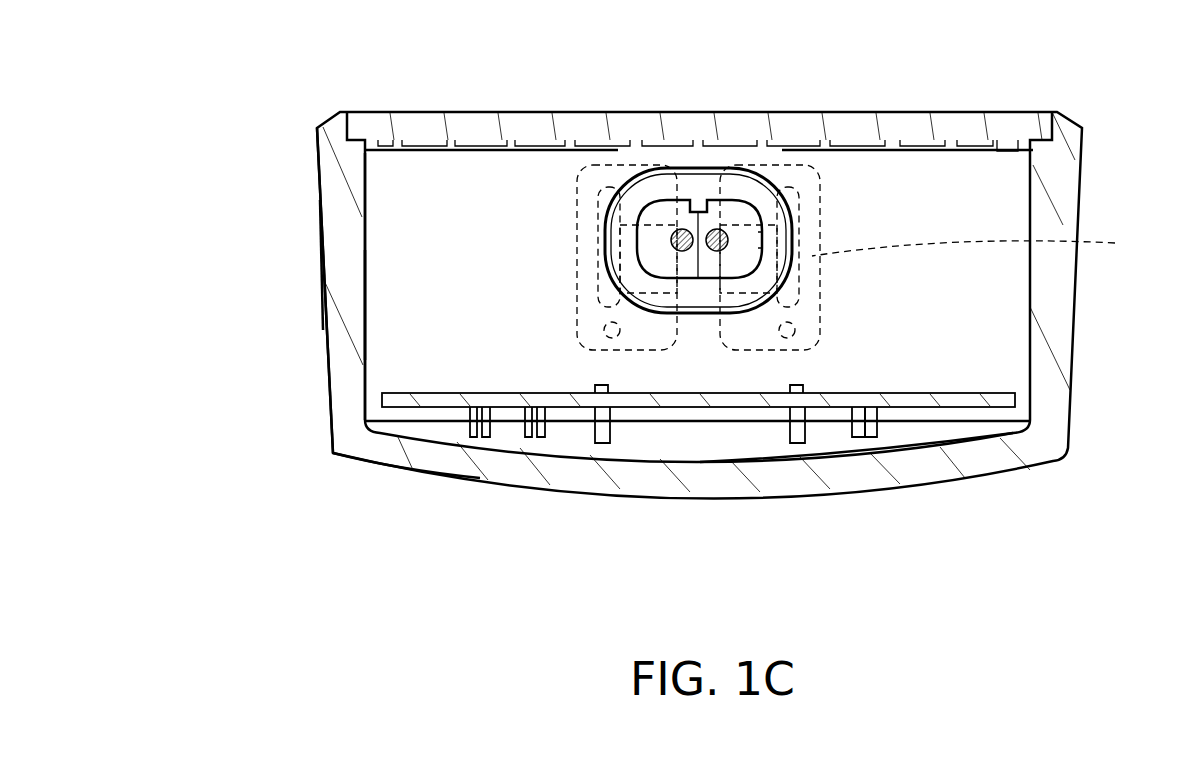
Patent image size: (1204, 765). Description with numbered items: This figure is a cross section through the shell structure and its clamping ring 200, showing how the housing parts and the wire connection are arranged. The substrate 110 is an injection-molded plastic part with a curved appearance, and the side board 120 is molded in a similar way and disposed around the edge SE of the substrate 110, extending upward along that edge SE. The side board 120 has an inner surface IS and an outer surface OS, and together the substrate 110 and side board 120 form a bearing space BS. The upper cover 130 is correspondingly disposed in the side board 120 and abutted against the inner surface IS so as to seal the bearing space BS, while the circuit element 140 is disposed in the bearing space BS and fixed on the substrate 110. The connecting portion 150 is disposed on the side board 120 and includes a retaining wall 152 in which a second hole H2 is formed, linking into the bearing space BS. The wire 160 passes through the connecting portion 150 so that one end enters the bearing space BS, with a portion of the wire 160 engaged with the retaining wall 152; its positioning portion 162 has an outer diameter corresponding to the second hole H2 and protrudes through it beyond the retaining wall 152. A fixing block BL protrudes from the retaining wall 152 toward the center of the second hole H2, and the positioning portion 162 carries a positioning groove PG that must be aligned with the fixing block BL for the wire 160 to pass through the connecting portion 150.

The substrate 110 is at (585, 470).
The side board 120 is at (340, 231).
The upper cover 130 is at (530, 125).
The circuit element 140 is at (730, 400).
The connecting portion 150 is at (523, 298).
The retaining wall 152 is at (523, 298).
The wire 160 is at (680, 236).
The positioning portion 162 is at (737, 215).
The clamping ring 200 is at (871, 257).
The fixing block BL is at (700, 205).
The second hole H2 is at (767, 240).
The positioning groove PG is at (703, 214).
The outer surface OS is at (322, 270).
The inner surface IS is at (372, 292).
The edge SE is at (333, 452).
The bearing space BS is at (838, 335).